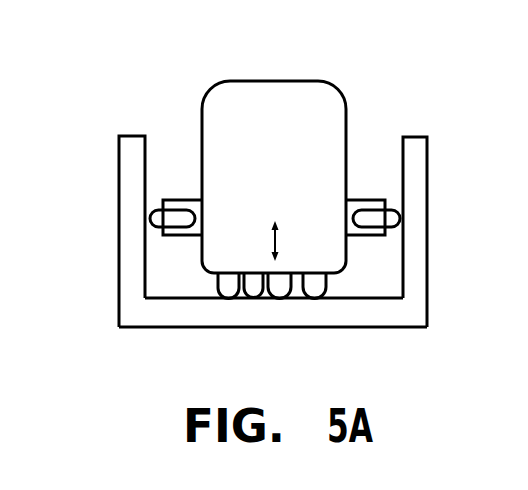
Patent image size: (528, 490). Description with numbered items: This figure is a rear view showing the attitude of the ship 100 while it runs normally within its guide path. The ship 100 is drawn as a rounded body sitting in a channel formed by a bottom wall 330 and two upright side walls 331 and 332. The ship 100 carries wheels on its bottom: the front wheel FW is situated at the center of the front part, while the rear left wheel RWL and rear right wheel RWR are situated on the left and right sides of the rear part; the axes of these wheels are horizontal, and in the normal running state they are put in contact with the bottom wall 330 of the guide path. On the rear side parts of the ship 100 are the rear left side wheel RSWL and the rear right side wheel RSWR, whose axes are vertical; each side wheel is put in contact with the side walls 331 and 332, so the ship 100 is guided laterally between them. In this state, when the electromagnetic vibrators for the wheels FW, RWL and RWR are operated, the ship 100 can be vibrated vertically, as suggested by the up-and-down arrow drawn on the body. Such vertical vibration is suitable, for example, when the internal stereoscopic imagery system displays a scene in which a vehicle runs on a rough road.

The ship 100 is at (278, 80).
The bottom wall of the guide path 330 is at (256, 312).
The side wall 331 is at (118, 217).
The side wall 332 is at (427, 208).
The rear left side wheel RSWL is at (160, 208).
The rear right side wheel RSWR is at (392, 210).
The rear left wheel RWL is at (228, 290).
The front wheel FW is at (272, 289).
The rear right wheel RWR is at (322, 289).